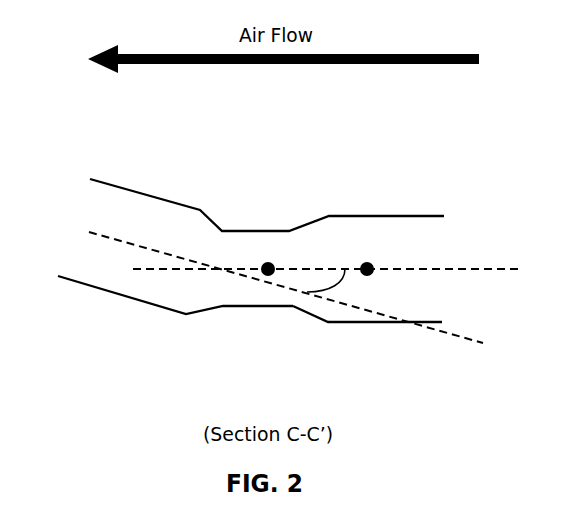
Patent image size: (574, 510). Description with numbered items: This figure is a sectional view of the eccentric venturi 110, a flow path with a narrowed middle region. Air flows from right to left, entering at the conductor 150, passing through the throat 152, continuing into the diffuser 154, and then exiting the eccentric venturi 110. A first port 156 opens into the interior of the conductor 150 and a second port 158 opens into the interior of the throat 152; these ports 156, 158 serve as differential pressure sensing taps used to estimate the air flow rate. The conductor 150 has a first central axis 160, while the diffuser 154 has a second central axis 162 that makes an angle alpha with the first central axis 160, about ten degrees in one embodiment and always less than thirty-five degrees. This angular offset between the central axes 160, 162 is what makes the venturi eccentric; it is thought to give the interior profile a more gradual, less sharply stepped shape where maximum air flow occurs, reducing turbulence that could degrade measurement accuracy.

The eccentric venturi 110 is at (248, 156).
The conductor 150 is at (367, 323).
The throat 152 is at (247, 307).
The diffuser 154 is at (150, 196).
The first port 156 is at (368, 262).
The second port 158 is at (268, 262).
The first central axis 160 is at (500, 269).
The second central axis 162 is at (113, 241).